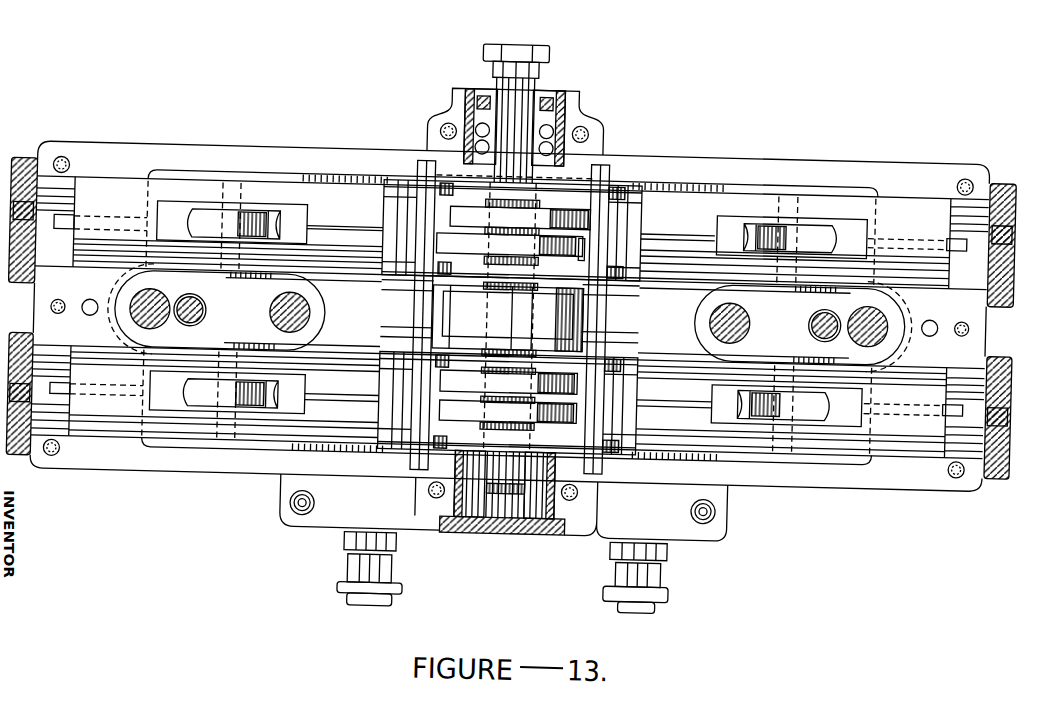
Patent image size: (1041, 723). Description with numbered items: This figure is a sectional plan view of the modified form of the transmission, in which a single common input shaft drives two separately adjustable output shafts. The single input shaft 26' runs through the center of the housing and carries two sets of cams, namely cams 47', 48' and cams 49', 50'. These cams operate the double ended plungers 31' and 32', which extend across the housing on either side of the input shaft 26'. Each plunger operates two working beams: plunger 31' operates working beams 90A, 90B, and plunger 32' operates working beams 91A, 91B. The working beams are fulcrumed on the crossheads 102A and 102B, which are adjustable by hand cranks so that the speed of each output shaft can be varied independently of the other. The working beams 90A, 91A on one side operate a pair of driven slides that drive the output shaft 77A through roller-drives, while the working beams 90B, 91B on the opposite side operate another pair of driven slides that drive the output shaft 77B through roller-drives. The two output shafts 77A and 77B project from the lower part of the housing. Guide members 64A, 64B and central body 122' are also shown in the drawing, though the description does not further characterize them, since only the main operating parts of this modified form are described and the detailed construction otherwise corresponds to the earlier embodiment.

The input shaft 26' is at (511, 261).
The double ended plunger 31' is at (513, 223).
The double ended plunger 32' is at (509, 387).
The cam 47' is at (520, 218).
The cam 48' is at (510, 247).
The cam 49' is at (509, 382).
The cam 50' is at (508, 412).
The guide rod 64A is at (417, 176).
The guide rod 64B is at (605, 168).
The output shaft 77A is at (377, 614).
The output shaft 77B is at (646, 612).
The working beam 90A is at (190, 224).
The working beam 90B is at (836, 225).
The working beam 91A is at (187, 401).
The working beam 91B is at (830, 405).
The crosshead 102A is at (233, 328).
The crosshead 102B is at (778, 332).
The central gear body 122' is at (508, 318).